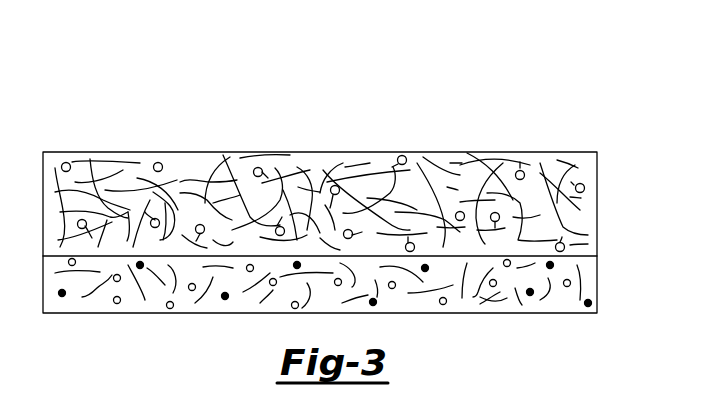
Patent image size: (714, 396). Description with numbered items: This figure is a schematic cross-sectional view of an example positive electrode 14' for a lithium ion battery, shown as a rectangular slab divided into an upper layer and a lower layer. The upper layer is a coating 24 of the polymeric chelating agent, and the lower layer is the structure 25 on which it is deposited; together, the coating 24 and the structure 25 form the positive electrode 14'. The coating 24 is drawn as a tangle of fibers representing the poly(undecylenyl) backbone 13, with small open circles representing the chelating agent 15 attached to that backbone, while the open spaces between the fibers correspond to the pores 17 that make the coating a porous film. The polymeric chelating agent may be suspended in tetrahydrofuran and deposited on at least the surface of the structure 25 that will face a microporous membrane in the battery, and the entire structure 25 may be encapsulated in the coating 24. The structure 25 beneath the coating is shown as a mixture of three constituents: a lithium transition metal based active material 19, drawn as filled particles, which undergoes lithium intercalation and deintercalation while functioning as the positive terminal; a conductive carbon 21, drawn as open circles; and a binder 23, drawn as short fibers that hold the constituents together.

The positive electrode 14' is at (354, 207).
The coating 24 is at (447, 151).
The structure 25 is at (598, 277).
The poly(undecylenyl) backbone 13 is at (345, 167).
The chelating agent 15 is at (162, 165).
The pores 17 is at (588, 244).
The binder 23 is at (88, 292).
The lithium transition metal based active material 19 is at (225, 297).
The conductive carbon 21 is at (443, 305).